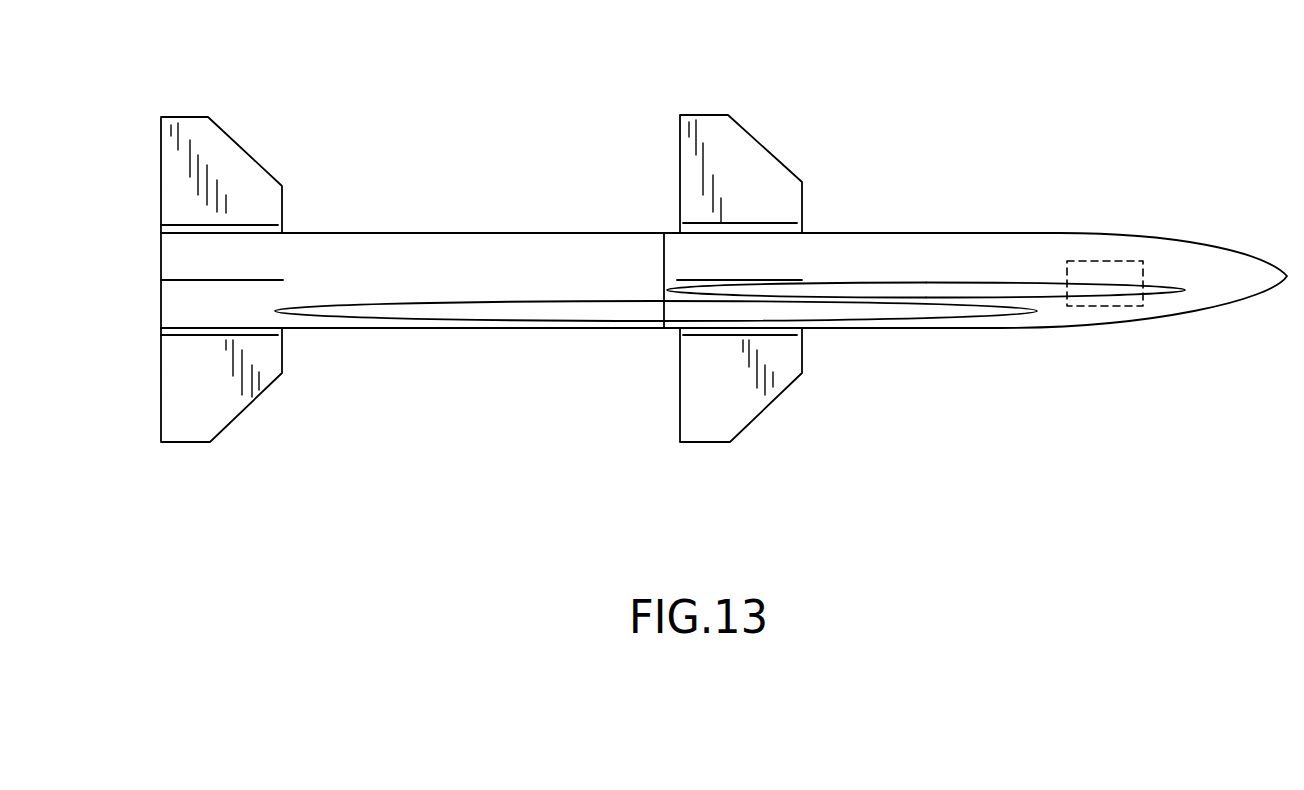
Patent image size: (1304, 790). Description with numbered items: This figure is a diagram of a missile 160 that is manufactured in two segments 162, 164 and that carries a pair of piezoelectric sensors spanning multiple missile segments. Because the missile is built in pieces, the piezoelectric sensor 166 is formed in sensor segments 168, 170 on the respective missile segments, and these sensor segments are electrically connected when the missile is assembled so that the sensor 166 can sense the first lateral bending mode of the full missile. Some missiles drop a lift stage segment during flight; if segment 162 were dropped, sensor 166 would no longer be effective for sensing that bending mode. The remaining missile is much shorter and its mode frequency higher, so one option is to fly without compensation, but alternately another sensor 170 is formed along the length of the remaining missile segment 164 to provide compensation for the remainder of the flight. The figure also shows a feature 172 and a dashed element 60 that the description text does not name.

The missile 160 is at (1003, 95).
The missile segment 162 is at (445, 248).
The missile segment 164 is at (958, 248).
The piezoelectric sensor 166 is at (505, 347).
The sensor segment 168 is at (597, 310).
The sensor segment 170 is at (845, 312).
The tip of inner member 172 is at (982, 283).
The sensor module 60 is at (1100, 258).